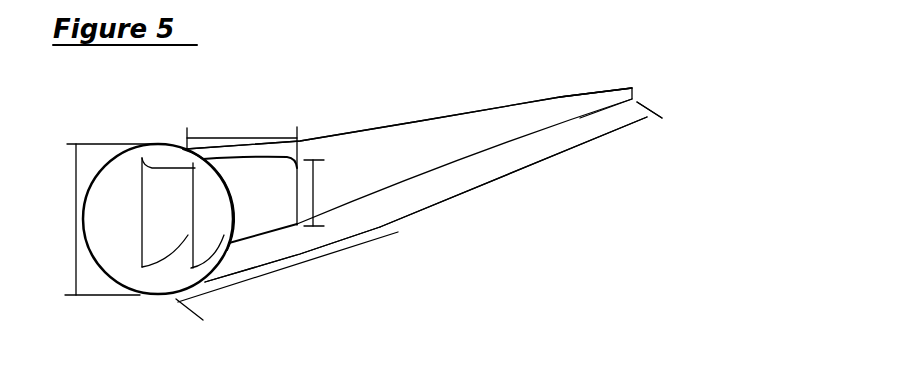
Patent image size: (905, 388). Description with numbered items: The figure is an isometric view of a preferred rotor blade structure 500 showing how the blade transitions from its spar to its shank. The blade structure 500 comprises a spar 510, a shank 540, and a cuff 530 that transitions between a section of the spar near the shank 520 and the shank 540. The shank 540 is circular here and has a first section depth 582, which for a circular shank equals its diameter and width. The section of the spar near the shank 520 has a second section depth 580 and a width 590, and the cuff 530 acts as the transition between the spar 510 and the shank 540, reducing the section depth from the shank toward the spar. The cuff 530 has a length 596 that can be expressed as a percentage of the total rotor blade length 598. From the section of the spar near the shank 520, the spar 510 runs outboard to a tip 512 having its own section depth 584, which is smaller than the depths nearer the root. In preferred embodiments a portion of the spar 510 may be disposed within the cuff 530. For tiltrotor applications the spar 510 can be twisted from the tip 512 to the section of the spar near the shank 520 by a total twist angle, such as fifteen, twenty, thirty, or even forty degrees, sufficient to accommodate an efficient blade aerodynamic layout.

The blade structure 500 is at (331, 128).
The spar 510 is at (470, 113).
The tip 512 is at (636, 88).
The section of the spar near the shank 520 is at (297, 181).
The cuff 530 is at (263, 237).
The shank 540 is at (155, 144).
The second section depth 580 is at (313, 193).
The first section depth 582 is at (76, 268).
The section depth 584 is at (640, 88).
The width 590 is at (247, 139).
The length 596 is at (232, 278).
The total rotor blade length 598 is at (460, 197).